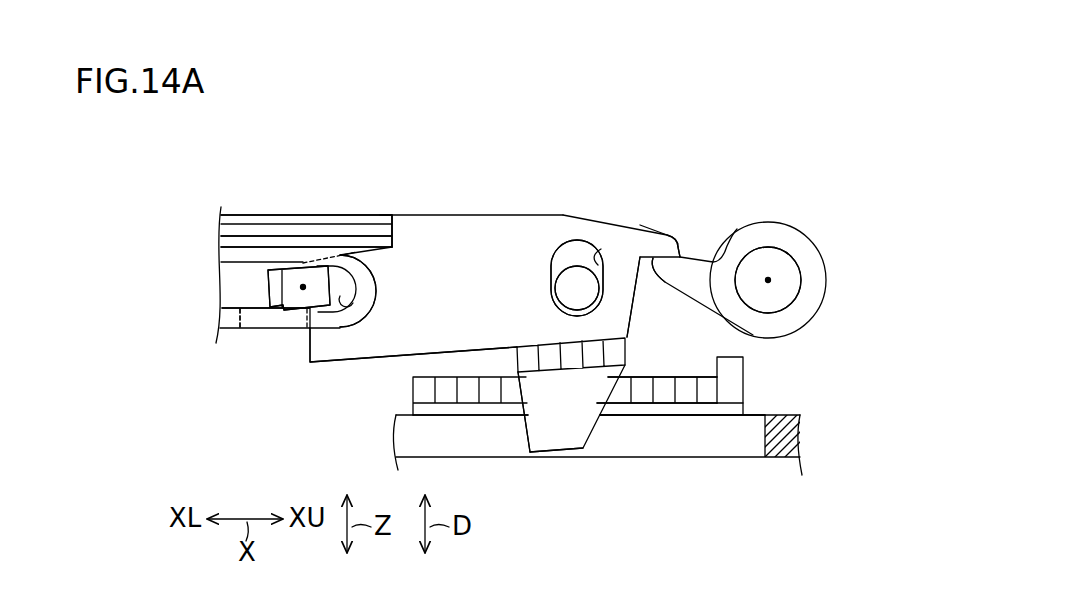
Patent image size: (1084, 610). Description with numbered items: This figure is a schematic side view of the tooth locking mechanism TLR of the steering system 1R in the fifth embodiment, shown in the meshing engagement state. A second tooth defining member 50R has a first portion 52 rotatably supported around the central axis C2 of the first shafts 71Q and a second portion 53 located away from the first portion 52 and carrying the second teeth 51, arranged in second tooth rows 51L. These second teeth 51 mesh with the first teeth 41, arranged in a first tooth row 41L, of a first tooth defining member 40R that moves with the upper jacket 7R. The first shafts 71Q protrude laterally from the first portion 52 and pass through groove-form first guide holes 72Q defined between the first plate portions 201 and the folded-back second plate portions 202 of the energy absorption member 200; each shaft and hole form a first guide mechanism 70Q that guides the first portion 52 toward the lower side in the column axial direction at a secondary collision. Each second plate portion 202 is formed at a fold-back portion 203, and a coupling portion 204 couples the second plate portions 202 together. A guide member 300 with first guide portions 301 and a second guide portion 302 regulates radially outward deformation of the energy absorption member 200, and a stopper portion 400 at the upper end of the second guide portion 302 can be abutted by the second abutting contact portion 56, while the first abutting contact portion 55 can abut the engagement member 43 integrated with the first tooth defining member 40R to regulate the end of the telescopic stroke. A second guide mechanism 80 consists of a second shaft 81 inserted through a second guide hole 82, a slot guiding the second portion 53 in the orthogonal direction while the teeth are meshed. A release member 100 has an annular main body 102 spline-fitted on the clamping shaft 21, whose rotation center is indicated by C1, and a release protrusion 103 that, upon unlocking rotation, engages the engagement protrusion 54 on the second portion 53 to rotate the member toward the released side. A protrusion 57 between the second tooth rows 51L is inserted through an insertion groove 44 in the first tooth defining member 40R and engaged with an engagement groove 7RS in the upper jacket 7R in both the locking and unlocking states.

The steering system 1R is at (734, 175).
The upper jacket 7R is at (803, 432).
The engagement groove 7RS is at (612, 442).
The clamping shaft 21 is at (802, 280).
The first tooth defining member 40R is at (411, 390).
The first teeth 41 is at (663, 397).
The first tooth row 41L is at (718, 390).
The engagement member 43 is at (732, 370).
The insertion groove 44 is at (512, 410).
The second tooth defining member 50R is at (471, 213).
The second teeth 51 is at (588, 358).
The second tooth rows 51L is at (515, 363).
The first portion 52 is at (322, 362).
The second portion 53 is at (613, 312).
The engagement protrusion 54 is at (668, 247).
The first abutting contact portion 55 is at (627, 353).
The second abutting contact portion 56 is at (388, 222).
The protrusion 57 is at (552, 440).
The first guide mechanism 70Q is at (446, 296).
The first shafts 71Q is at (343, 321).
The first guide holes 72Q is at (345, 299).
The second guide mechanism 80 is at (570, 158).
The second shaft 81 is at (577, 273).
The second guide hole 82 is at (603, 268).
The release member 100 is at (823, 247).
The main body 102 is at (813, 268).
The release protrusion 103 is at (665, 272).
The energy absorption member 200 is at (212, 250).
The first plate portions 201 is at (303, 253).
The second plate portions 202 is at (255, 322).
The fold-back portion 203 is at (363, 287).
The coupling portion 204 is at (235, 333).
The guide member 300 is at (281, 212).
The first guide portions 301 is at (248, 240).
The second guide portion 302 is at (353, 219).
The stopper portion 400 is at (392, 217).
The rotation center of arm C1 is at (768, 280).
The central axis C2 is at (303, 287).
The tooth locking mechanism TLR is at (780, 198).